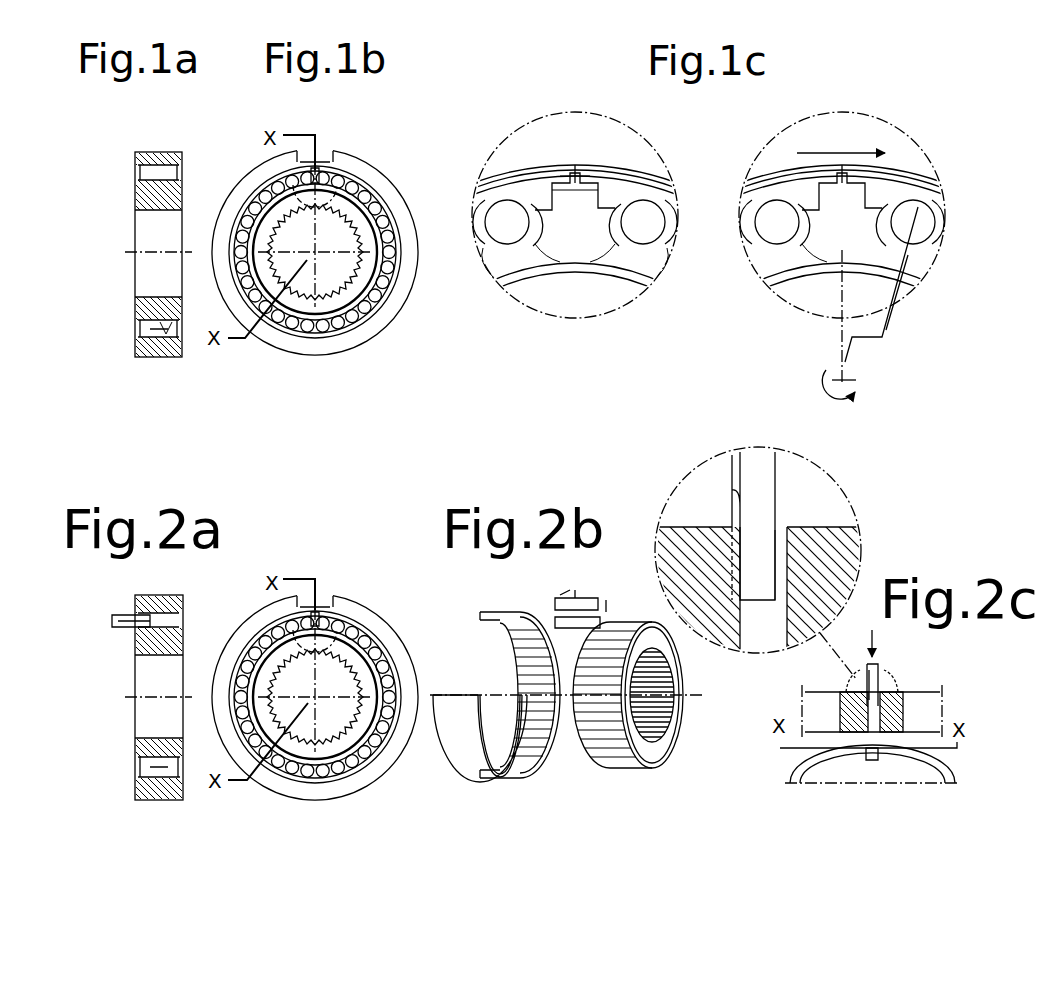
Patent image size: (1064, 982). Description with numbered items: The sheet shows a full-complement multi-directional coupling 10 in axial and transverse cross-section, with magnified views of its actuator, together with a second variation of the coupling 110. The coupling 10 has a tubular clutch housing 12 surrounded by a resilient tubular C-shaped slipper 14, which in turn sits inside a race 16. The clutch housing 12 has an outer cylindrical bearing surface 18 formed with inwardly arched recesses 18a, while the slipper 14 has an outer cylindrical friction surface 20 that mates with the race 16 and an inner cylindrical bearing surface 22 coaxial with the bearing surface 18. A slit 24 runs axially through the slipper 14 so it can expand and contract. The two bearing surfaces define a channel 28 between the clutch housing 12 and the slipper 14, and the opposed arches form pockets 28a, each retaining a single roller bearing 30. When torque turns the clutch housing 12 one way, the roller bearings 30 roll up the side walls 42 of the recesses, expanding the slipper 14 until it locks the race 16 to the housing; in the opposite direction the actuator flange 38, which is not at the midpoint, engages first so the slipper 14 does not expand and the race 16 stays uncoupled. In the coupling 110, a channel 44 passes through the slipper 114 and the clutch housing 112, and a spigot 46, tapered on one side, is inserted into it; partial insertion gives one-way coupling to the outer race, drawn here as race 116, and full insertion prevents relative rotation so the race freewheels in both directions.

In FIG. 1A, the full-complement multi-directional coupling 10 is at (83, 332).
In FIG. 1A, the tubular clutch housing 12 is at (148, 202).
In FIG. 1B, the tubular clutch housing 12 is at (350, 293).
In FIG. 1C, the tubular clutch housing 12 is at (567, 248).
In FIG. 2A, the tubular clutch housing 12 is at (352, 738).
In FIG. 1A, the resilient tubular C-shaped slipper 14 is at (136, 324).
In FIG. 1B, the resilient tubular C-shaped slipper 14 is at (345, 177).
In FIG. 1C, the resilient tubular C-shaped slipper 14 is at (522, 188).
In FIG. 1A, the race 16 is at (136, 355).
In FIG. 1B, the race 16 is at (233, 205).
In FIG. 1C, the race 16 is at (548, 143).
In FIG. 2A, the race 16 is at (148, 795).
In FIG. 1A, the outer cylindrical bearing surface 18 is at (148, 313).
In FIG. 2B, the outer cylindrical bearing surface 18 is at (603, 742).
In FIG. 1C, the arched recesses 18a is at (622, 232).
In FIG. 1A, the outer cylindrical friction surface 20 is at (137, 158).
In FIG. 1A, the inner cylindrical bearing surface 22 is at (163, 170).
In FIG. 2B, the inner cylindrical bearing surface 22 is at (520, 647).
In FIG. 1C, the slit 24 is at (573, 173).
In FIG. 1C, the channel 28 is at (808, 235).
In FIG. 1C, the pockets 28a is at (490, 250).
In FIG. 1A, the roller bearings 30 is at (172, 355).
In FIG. 1B, the roller bearings 30 is at (367, 205).
In FIG. 2A, the roller bearings 30 is at (137, 757).
In FIG. 1C, the actuator flange 38 is at (568, 200).
In FIG. 1C, the side walls 42 is at (938, 203).
In FIG. 2A, the channel 44 is at (327, 607).
In FIG. 2C, the channel 44 is at (768, 622).
In FIG. 2A, the spigot 46 is at (117, 617).
In FIG. 2C, the spigot 46 is at (765, 523).
In FIG. 2A, the coupling 110 is at (102, 753).
In FIG. 2A, the clutch housing 112 is at (135, 648).
In FIG. 2B, the clutch housing 112 is at (650, 745).
In FIG. 2C, the clutch housing 112 is at (688, 553).
In FIG. 2A, the slipper 114 is at (173, 802).
In FIG. 2B, the slipper 114 is at (480, 773).
In FIG. 2A, the housing ring 116 is at (318, 790).